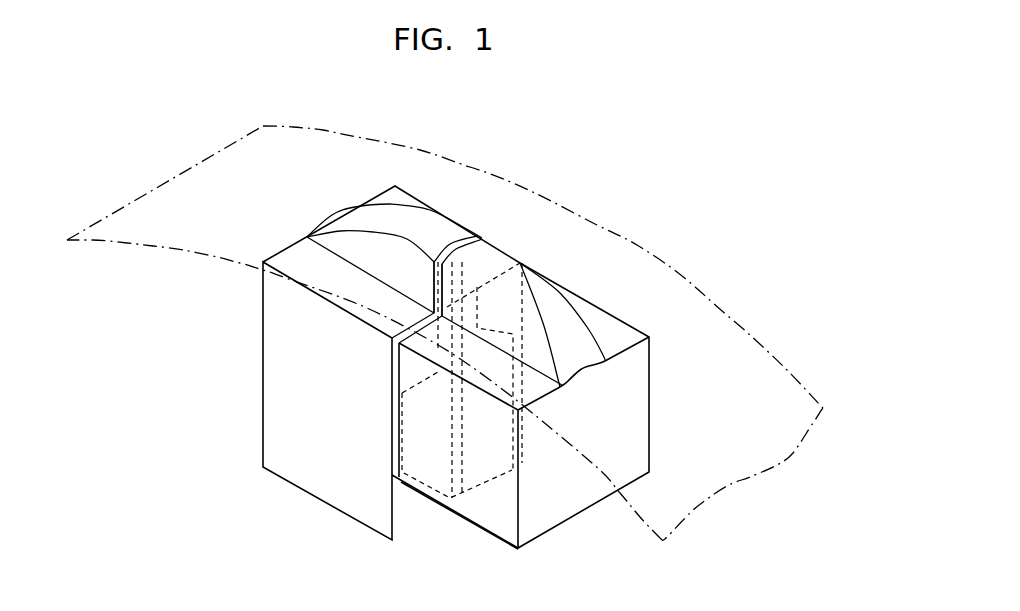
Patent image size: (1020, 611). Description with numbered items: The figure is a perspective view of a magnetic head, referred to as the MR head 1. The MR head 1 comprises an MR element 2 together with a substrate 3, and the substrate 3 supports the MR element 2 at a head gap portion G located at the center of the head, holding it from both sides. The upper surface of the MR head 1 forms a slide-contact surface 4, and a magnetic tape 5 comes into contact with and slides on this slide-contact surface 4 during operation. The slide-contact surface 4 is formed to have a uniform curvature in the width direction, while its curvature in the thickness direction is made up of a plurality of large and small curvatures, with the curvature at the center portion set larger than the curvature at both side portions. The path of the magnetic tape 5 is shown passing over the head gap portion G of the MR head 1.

The magnetic head 1 is at (252, 358).
The gap groove / slit 2 is at (435, 258).
The core half 3 is at (337, 243).
The winding window 4 is at (490, 257).
The tape / medium contact surface outline 5 is at (595, 223).
The magnetic gap G is at (432, 310).